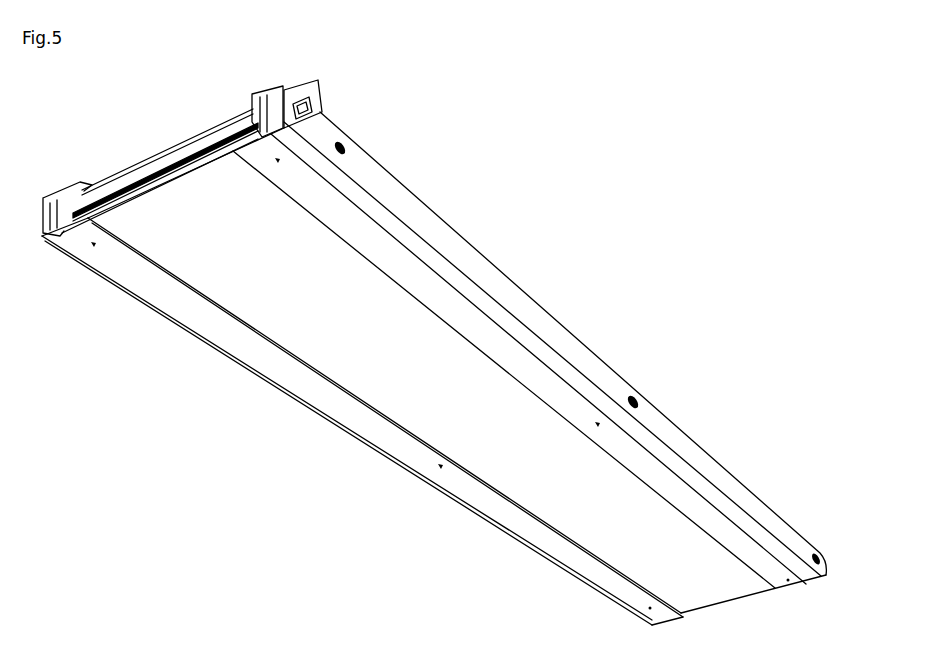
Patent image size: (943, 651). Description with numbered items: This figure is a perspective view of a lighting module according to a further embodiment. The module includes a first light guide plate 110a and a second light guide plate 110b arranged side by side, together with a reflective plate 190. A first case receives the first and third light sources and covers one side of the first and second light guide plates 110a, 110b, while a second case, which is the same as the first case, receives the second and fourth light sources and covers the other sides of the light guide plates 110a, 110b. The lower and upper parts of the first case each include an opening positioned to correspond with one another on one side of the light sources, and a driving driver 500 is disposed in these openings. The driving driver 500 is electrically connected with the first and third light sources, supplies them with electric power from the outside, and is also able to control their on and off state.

The first light guide plate 110a is at (177, 149).
The second light guide plate 110b is at (147, 186).
The reflective plate 190 is at (212, 135).
The driving driver 500 is at (310, 106).